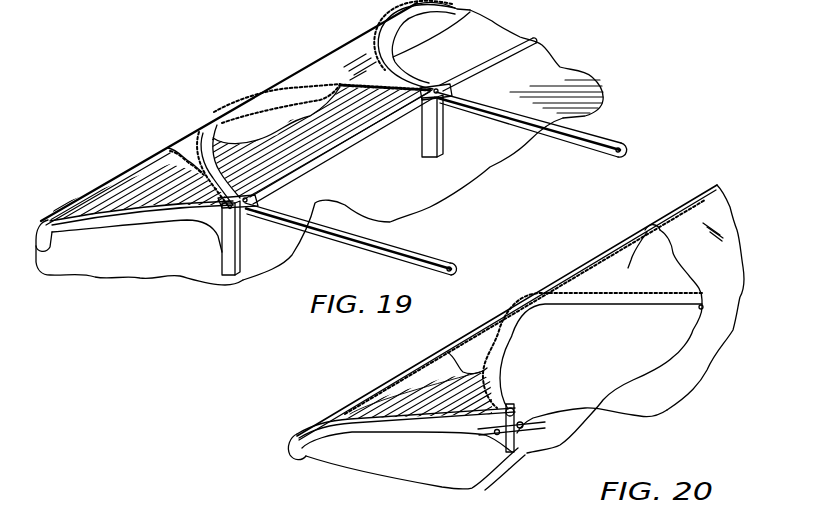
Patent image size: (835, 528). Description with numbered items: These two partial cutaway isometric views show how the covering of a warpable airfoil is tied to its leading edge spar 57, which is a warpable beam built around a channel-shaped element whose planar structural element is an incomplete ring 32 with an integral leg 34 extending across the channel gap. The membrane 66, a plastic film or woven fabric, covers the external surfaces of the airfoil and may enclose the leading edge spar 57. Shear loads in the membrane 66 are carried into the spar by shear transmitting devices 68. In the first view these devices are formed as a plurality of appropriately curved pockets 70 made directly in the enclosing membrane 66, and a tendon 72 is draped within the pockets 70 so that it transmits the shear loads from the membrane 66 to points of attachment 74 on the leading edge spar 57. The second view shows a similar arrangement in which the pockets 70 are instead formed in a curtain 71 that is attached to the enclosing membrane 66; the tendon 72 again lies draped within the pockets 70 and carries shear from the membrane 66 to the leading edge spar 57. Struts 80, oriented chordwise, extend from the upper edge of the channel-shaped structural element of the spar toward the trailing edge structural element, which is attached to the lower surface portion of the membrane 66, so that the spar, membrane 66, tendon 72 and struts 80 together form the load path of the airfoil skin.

In FIG. 19, the incomplete ring 32 is at (140, 213).
In FIG. 20, the incomplete ring 32 is at (437, 435).
In FIG. 19, the leg 34 is at (443, 140).
In FIG. 19, the leading edge spar 57 is at (165, 121).
In FIG. 19, the membrane 66 is at (574, 67).
In FIG. 20, the membrane 66 is at (720, 270).
In FIG. 19, the shear transmitting devices 68 is at (228, 110).
In FIG. 19, the pockets 70 is at (283, 88).
In FIG. 20, the pockets 70 is at (456, 337).
In FIG. 20, the curtain 71 is at (628, 262).
In FIG. 20, the tendon 72 is at (641, 416).
In FIG. 19, the points of attachment 74 is at (530, 33).
In FIG. 20, the points of attachment 74 is at (520, 452).
In FIG. 19, the struts 80 is at (607, 136).